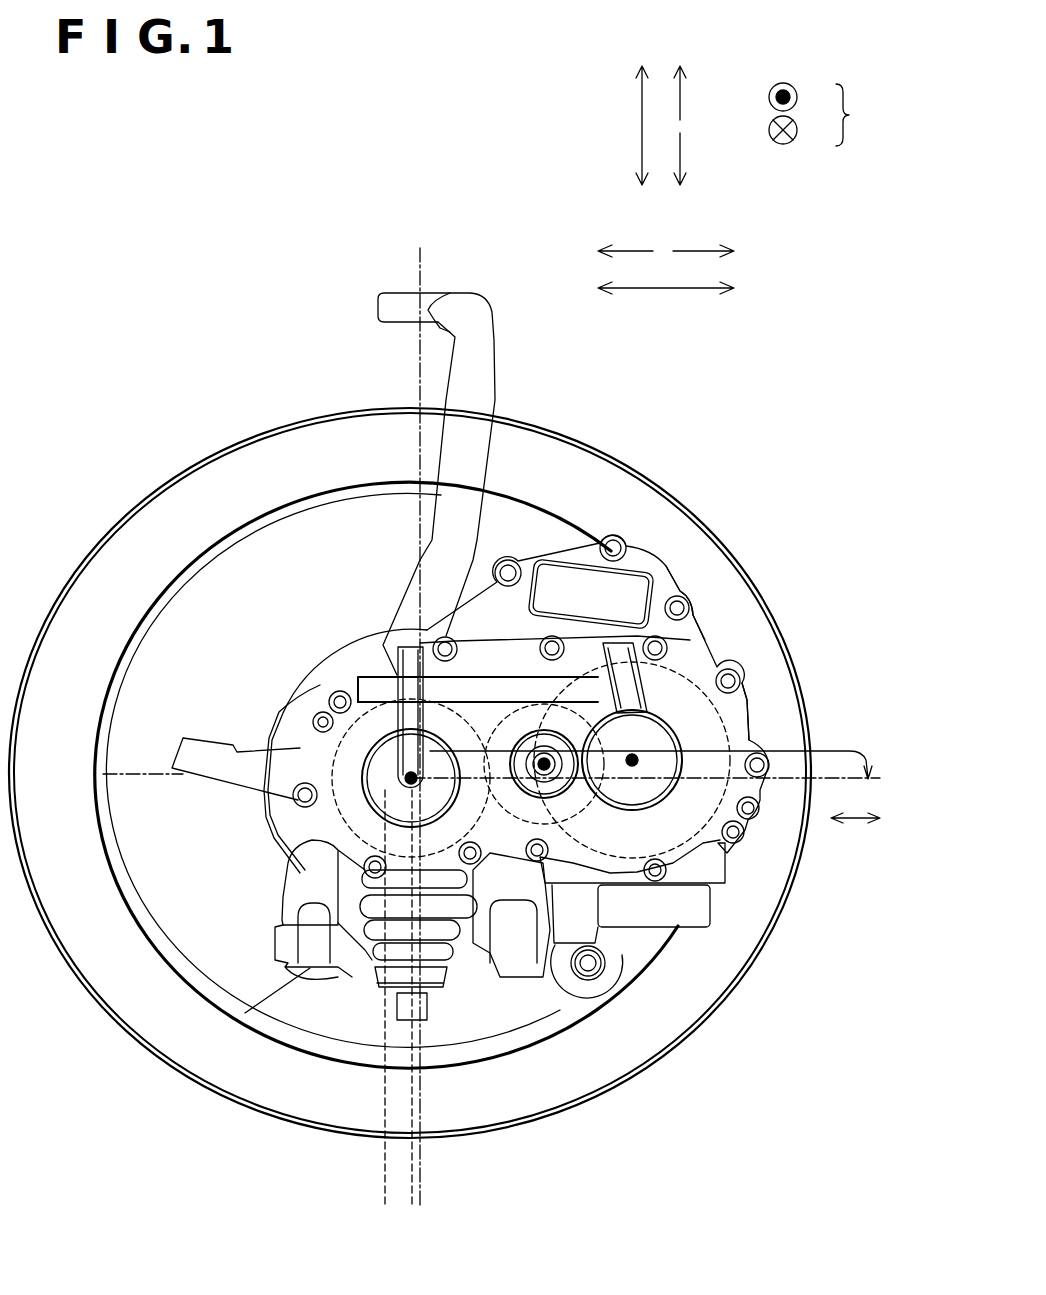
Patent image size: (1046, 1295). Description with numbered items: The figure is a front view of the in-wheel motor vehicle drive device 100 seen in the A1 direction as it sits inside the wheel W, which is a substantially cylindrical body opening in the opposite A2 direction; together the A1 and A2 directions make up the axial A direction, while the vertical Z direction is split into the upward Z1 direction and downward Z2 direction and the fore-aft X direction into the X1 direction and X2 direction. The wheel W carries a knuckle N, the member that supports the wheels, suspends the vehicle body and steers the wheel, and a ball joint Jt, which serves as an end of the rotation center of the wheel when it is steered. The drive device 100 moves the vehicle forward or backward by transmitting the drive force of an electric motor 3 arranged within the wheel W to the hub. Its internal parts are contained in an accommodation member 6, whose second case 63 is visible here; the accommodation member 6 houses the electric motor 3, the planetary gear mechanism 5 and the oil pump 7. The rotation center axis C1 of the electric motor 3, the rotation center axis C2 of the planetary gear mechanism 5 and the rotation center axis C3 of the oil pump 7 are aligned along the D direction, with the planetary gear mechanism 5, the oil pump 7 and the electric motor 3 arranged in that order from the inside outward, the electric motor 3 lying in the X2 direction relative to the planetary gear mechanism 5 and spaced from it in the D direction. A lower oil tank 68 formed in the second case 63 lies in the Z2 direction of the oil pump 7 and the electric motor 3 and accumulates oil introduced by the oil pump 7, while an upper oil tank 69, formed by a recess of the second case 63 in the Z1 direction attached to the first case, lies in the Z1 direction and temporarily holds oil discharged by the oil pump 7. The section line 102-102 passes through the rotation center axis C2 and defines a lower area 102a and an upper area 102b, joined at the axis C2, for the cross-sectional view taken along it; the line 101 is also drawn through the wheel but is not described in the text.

The steering axis 101 is at (460, 270).
The line 102- 102 is at (360, 1197).
The area 102a is at (361, 875).
The area 102b is at (638, 747).
The knuckle N is at (485, 385).
The wheel W is at (700, 508).
The in-wheel motor vehicle drive device 100 is at (552, 550).
The accommodation member 6 is at (509, 557).
The upper oil tank 69 is at (610, 533).
The second case 63 is at (700, 640).
The electric motor 3 is at (747, 710).
The planetary gear mechanism 5 is at (450, 715).
The oil pump 7 is at (535, 703).
The rotation center axis of the electric motor C1 is at (637, 767).
The rotation center axis of the planetary gear mechanism C2 is at (400, 773).
The rotation center axis of the oil pump C3 is at (541, 772).
The D direction D is at (855, 802).
The ball joint Jt is at (433, 953).
The lower oil tank 68 is at (665, 928).
The Z direction Z is at (651, 125).
The Z1 direction Z1 is at (697, 93).
The Z2 direction Z2 is at (697, 159).
The X direction X is at (666, 276).
The X1 direction X1 is at (627, 238).
The X2 direction X2 is at (703, 238).
The A direction A is at (856, 115).
The A1 direction A1 is at (802, 98).
The A2 direction A2 is at (802, 131).